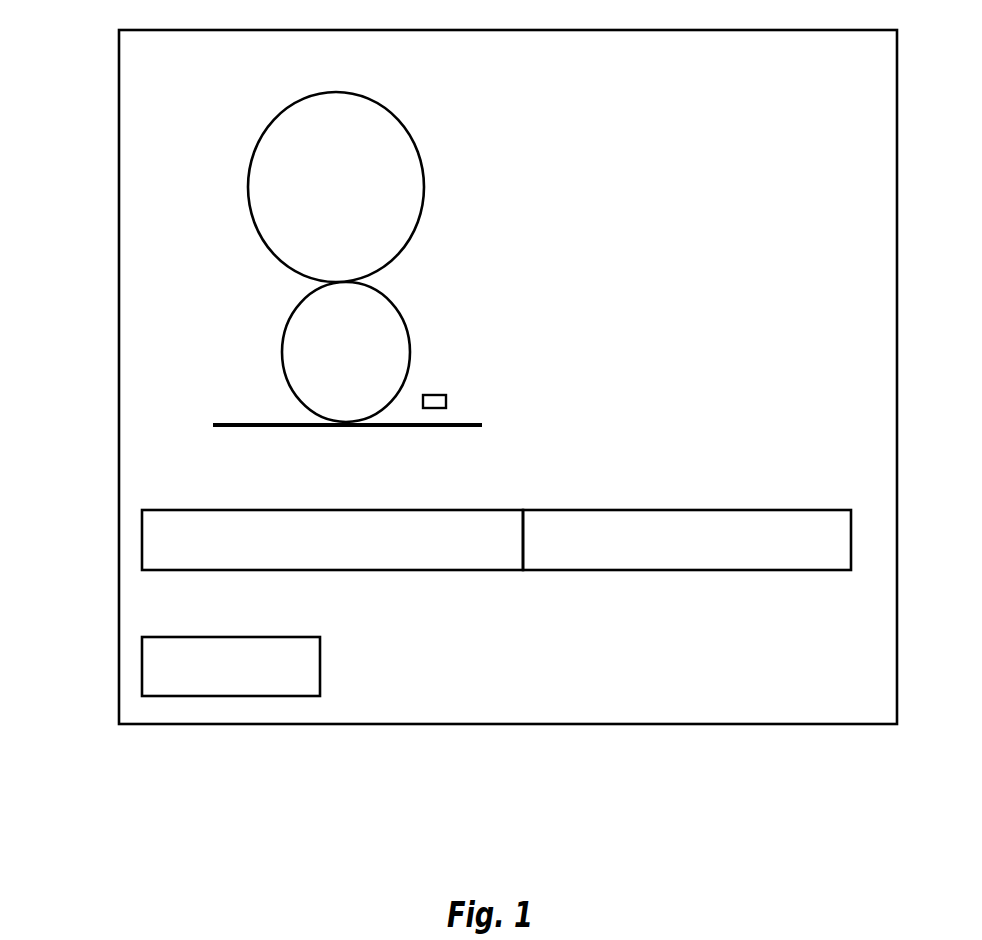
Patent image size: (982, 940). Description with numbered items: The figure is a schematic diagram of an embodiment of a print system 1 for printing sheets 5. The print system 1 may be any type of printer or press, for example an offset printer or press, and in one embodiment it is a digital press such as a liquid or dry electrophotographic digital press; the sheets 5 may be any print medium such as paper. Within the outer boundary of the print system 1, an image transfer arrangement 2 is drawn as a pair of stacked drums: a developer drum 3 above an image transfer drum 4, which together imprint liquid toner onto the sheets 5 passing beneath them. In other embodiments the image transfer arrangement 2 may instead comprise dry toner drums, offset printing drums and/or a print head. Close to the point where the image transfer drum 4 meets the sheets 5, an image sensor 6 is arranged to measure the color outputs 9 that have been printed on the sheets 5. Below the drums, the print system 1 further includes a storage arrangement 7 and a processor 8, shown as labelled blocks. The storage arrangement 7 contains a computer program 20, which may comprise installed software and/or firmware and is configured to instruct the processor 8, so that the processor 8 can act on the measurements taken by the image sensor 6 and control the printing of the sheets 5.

The print system 1 is at (525, 178).
The image transfer arrangement 2 is at (258, 263).
The developer drum 3 is at (303, 204).
The image transfer drum 4 is at (350, 367).
The sheets 5 is at (420, 427).
The image sensor 6 is at (438, 398).
The storage arrangement 7 is at (182, 510).
The processor 8 is at (142, 655).
The color outputs 9 is at (412, 410).
The computer program 20 is at (640, 572).